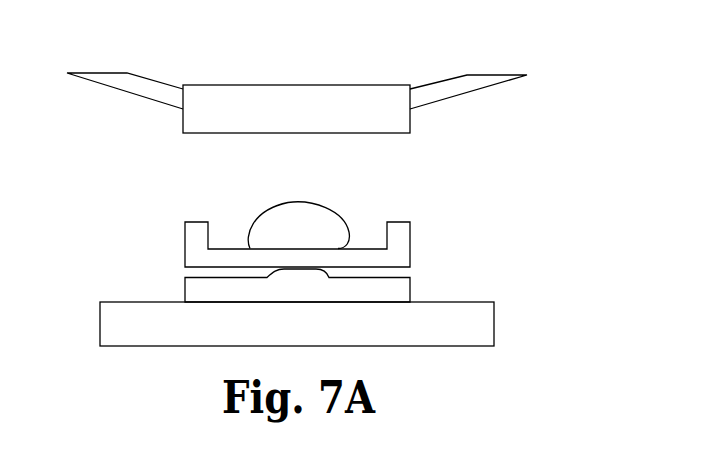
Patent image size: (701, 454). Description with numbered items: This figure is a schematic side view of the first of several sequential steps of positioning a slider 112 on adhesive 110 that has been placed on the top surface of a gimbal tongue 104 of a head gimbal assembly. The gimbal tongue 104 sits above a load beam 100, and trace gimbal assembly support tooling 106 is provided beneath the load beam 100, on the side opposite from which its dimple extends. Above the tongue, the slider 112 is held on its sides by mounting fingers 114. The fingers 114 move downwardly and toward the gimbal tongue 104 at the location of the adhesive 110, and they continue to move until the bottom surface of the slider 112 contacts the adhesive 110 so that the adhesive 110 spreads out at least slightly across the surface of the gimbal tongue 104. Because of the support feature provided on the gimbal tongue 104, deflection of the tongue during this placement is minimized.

The load beam 100 is at (399, 290).
The gimbal tongue 104 is at (399, 249).
The trace gimbal assembly support tooling 106 is at (484, 326).
The adhesive 110 is at (324, 221).
The slider 112 is at (386, 97).
The mounting fingers 114 is at (112, 80).